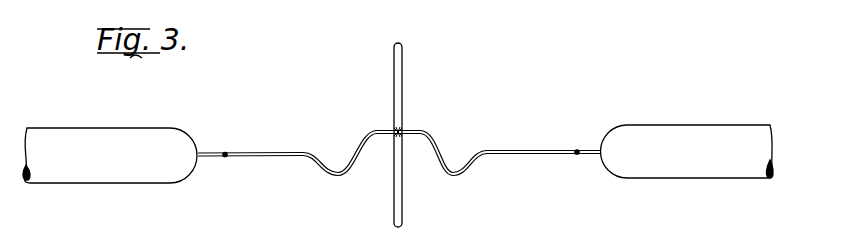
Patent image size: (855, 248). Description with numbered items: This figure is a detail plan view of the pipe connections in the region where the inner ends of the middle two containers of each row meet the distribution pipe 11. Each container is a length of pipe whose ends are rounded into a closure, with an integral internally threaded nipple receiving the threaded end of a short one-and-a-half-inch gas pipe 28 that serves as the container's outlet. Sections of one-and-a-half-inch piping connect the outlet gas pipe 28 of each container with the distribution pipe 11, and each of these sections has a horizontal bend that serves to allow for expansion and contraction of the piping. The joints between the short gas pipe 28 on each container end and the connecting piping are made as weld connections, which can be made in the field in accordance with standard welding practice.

The distribution pipe 11 is at (402, 76).
The gas pipe 28 is at (211, 150).